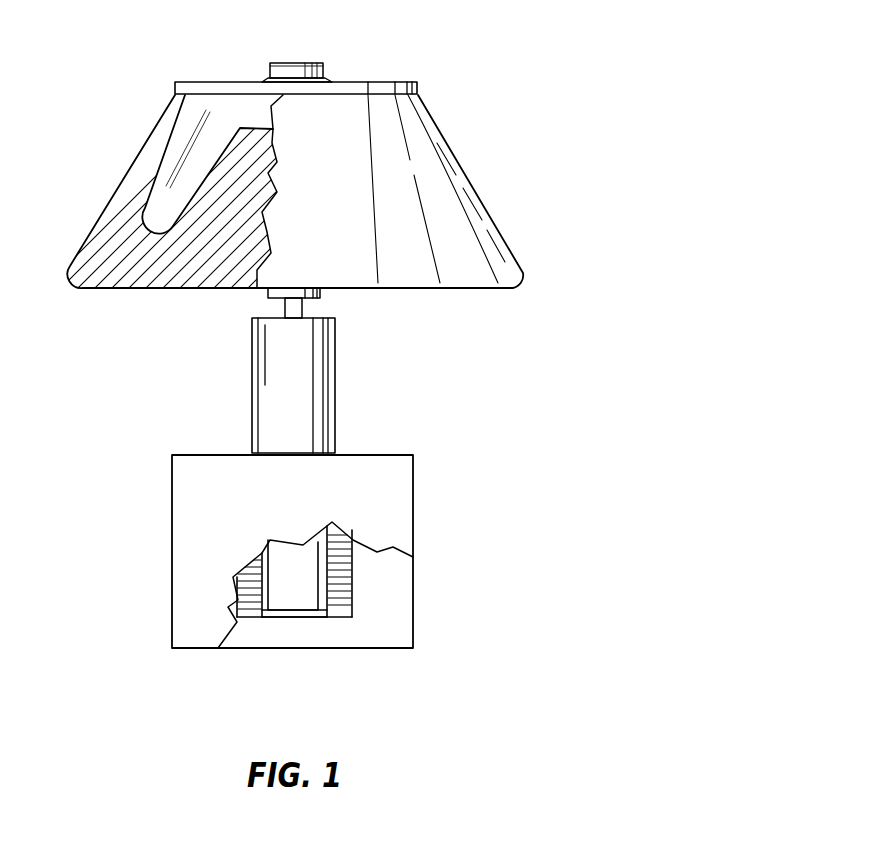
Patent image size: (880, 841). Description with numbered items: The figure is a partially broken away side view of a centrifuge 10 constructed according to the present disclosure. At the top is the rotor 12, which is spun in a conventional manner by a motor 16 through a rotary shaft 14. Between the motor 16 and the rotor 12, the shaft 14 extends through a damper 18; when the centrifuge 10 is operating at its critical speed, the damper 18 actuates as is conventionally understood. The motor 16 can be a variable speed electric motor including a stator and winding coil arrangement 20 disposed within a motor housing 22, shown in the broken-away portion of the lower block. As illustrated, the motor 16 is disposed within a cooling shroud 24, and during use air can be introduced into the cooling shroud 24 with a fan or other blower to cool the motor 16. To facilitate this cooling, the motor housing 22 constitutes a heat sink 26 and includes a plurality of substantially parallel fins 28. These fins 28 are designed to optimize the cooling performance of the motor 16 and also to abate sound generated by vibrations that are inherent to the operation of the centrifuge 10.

The centrifuge 10 is at (480, 66).
The rotor 12 is at (105, 211).
The rotary shaft 14 is at (288, 311).
The motor 16 is at (268, 632).
The damper 18 is at (262, 428).
The stator and winding coil arrangement 20 is at (295, 598).
The motor housing 22 is at (342, 608).
The cooling shroud 24 is at (413, 495).
The heat sink 26 is at (340, 572).
The fins 28 is at (340, 595).